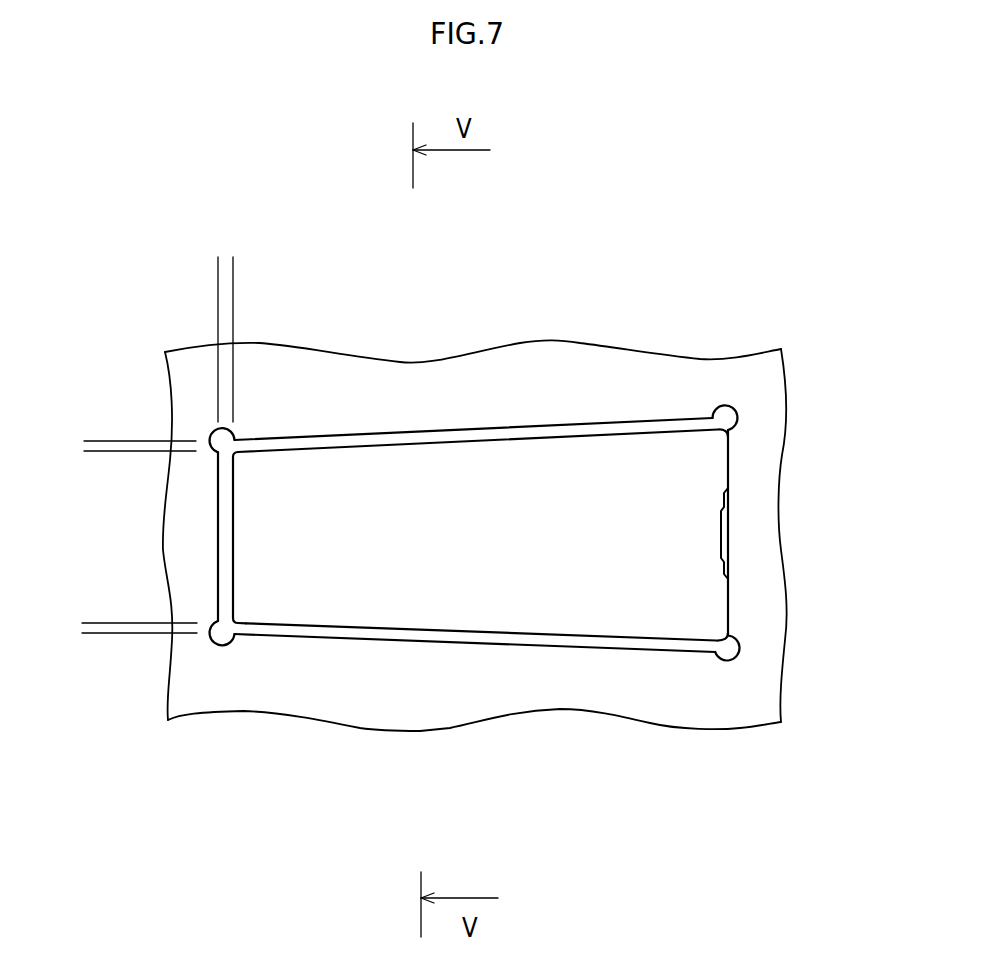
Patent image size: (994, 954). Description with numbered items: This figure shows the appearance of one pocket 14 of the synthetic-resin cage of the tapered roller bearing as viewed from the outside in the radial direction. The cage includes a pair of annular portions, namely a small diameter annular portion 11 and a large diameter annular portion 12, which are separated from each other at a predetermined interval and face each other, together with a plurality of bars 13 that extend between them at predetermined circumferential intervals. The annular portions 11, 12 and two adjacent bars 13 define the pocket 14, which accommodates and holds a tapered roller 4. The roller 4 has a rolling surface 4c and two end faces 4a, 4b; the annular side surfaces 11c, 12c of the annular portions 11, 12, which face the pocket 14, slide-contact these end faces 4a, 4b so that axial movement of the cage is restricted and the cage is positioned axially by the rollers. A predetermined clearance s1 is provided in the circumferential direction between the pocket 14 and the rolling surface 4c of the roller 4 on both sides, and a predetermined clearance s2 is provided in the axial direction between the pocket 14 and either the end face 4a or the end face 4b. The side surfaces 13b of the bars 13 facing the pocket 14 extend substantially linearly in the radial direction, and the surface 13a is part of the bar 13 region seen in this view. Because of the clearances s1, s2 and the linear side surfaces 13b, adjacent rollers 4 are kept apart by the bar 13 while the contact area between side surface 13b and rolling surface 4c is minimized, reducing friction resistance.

The tapered roller 4 is at (474, 538).
The end face of the tapered roller 4a is at (252, 618).
The end face of the tapered roller 4b is at (728, 460).
The rolling surface of the tapered roller 4c is at (612, 430).
The small diameter annular portion 11 is at (167, 583).
The annular side surface 11c is at (242, 636).
The large diameter annular portion 12 is at (794, 535).
The annular side surface 12c is at (728, 583).
The bar 13 is at (528, 370).
The surface of third frame portion 13a is at (302, 382).
The side surface of the bar 13b is at (372, 437).
The pocket 14 is at (368, 619).
The clearance s1 is at (88, 400).
The clearance s2 is at (282, 265).